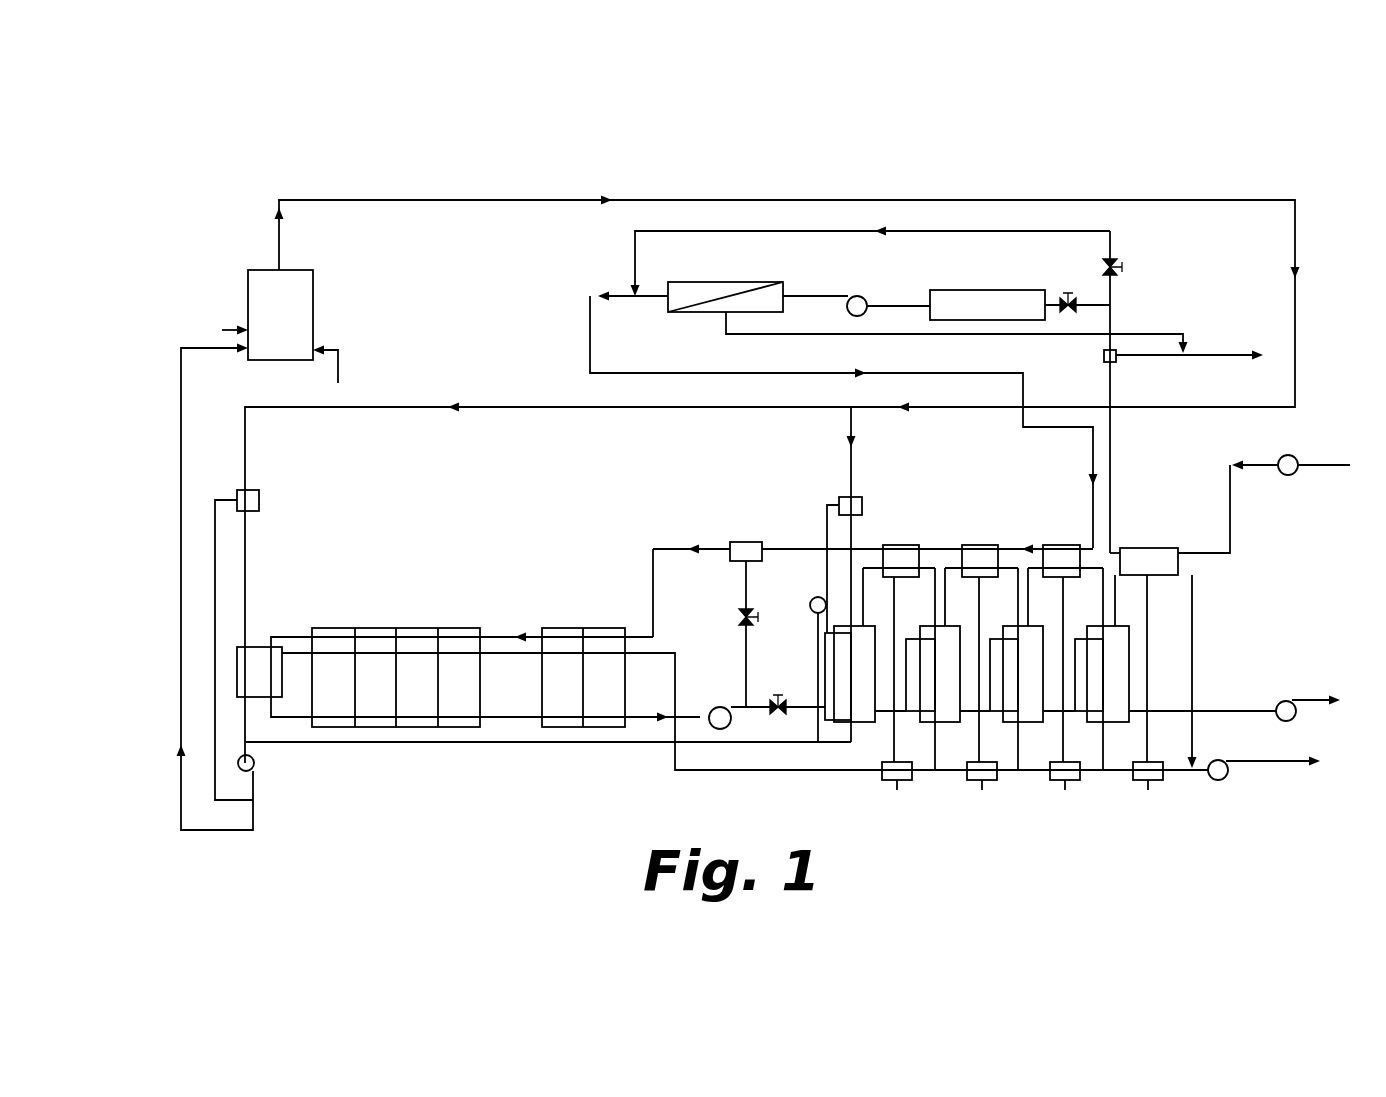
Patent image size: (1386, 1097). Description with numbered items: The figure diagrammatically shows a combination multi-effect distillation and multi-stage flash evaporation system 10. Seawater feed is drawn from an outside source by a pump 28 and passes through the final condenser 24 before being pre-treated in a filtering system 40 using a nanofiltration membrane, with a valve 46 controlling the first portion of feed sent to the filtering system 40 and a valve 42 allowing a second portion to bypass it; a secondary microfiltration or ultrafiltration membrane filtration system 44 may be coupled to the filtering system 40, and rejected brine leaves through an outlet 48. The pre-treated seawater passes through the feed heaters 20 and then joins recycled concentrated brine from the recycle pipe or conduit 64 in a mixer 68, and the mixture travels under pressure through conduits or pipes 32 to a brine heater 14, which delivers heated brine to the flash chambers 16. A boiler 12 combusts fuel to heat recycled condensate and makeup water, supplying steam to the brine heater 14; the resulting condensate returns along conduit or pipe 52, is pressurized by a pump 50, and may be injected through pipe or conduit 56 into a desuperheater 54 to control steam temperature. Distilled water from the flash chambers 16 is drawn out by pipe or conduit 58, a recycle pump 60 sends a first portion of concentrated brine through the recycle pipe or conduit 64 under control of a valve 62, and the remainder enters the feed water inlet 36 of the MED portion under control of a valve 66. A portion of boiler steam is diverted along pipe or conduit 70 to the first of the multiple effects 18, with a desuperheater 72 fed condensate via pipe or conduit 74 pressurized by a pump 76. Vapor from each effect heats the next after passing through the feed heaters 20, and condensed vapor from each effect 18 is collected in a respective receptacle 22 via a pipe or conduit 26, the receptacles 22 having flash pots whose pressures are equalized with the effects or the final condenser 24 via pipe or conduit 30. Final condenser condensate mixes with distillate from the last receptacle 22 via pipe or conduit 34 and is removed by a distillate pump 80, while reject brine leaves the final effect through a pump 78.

The combination multi-effect distillation and multi-stage flash evaporation system 10 is at (1245, 163).
The boiler 12 is at (313, 290).
The brine heater 14 is at (258, 697).
The flash chambers 16 is at (600, 628).
The effects 18 is at (868, 626).
The feed heaters 20 is at (900, 545).
The receptacles 22 is at (897, 780).
The final condenser 24 is at (1178, 575).
The pipe or conduit 26 is at (938, 745).
The pump 28 is at (1298, 458).
The pipe or conduit 30 is at (908, 745).
The conduits or pipes 32 is at (646, 632).
The pipe or conduit 34 is at (1208, 641).
The feed water inlet 36 is at (825, 658).
The filtering system 40 is at (760, 280).
The valve 42 is at (1124, 252).
The microfiltration or ultrafiltration membrane filtration system 44 is at (925, 303).
The valve 46 is at (1070, 282).
The outlet 48 is at (1210, 342).
The pump 50 is at (254, 768).
The conduit or pipe 52 is at (182, 700).
The desuperheater 54 is at (259, 500).
The pipe or conduit 56 is at (230, 495).
The pipe or conduit 58 is at (660, 690).
The recycle pump 60 is at (727, 729).
The valve 62 is at (756, 604).
The recycle pipe or conduit 64 is at (746, 642).
The valve 66 is at (785, 728).
The mixer 68 is at (745, 542).
The pipe or conduit 70 is at (848, 432).
The desuperheater 72 is at (862, 505).
The pipe or conduit 74 is at (478, 742).
The pump 76 is at (810, 610).
The pump 78 is at (1296, 715).
The distillate pump 80 is at (1226, 778).